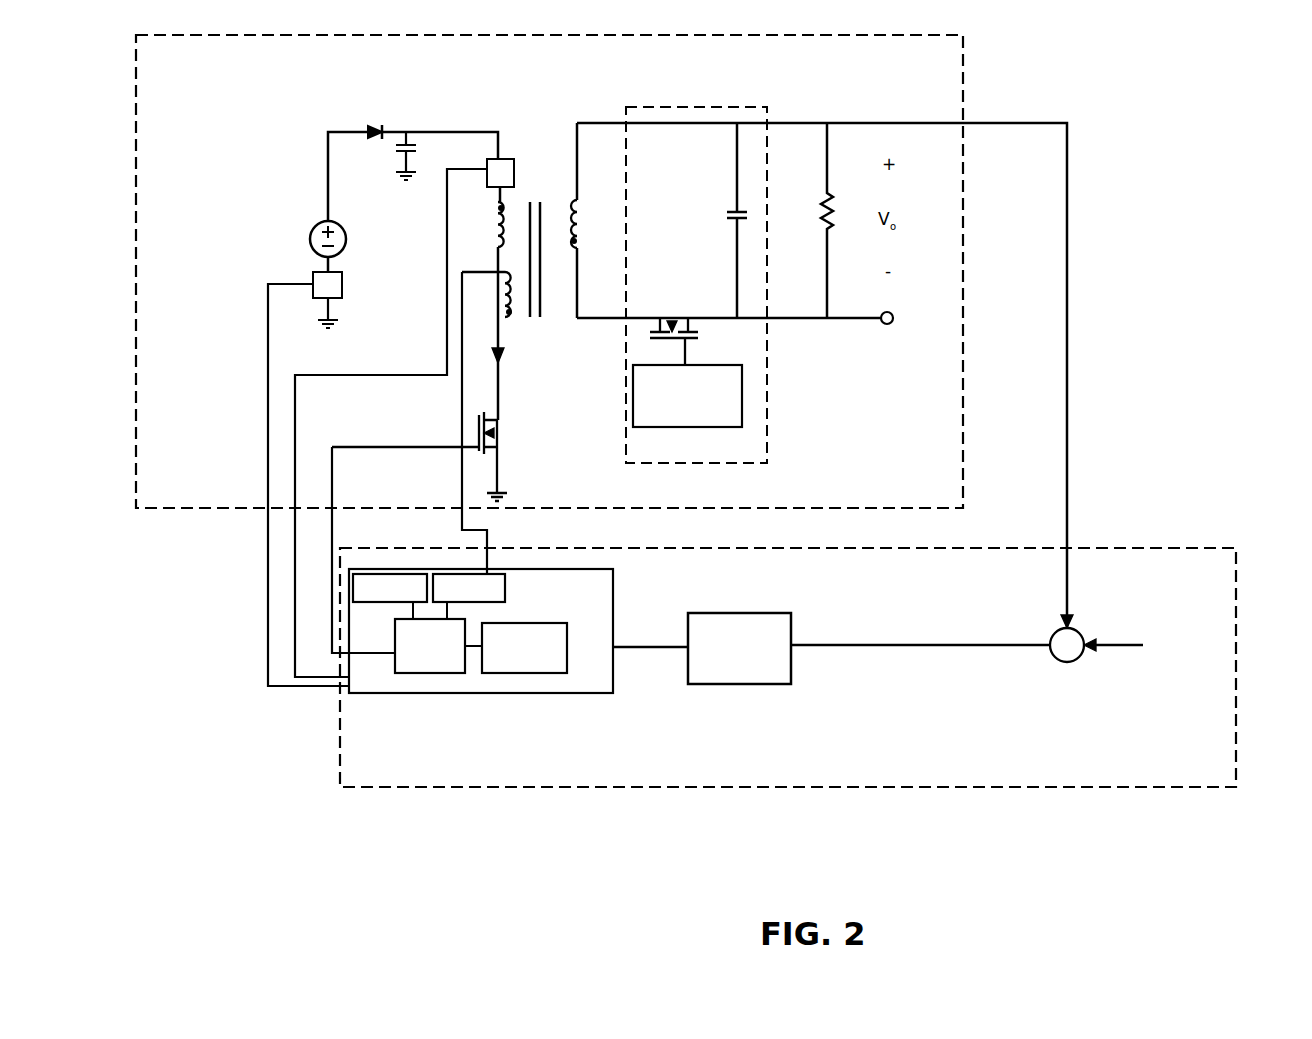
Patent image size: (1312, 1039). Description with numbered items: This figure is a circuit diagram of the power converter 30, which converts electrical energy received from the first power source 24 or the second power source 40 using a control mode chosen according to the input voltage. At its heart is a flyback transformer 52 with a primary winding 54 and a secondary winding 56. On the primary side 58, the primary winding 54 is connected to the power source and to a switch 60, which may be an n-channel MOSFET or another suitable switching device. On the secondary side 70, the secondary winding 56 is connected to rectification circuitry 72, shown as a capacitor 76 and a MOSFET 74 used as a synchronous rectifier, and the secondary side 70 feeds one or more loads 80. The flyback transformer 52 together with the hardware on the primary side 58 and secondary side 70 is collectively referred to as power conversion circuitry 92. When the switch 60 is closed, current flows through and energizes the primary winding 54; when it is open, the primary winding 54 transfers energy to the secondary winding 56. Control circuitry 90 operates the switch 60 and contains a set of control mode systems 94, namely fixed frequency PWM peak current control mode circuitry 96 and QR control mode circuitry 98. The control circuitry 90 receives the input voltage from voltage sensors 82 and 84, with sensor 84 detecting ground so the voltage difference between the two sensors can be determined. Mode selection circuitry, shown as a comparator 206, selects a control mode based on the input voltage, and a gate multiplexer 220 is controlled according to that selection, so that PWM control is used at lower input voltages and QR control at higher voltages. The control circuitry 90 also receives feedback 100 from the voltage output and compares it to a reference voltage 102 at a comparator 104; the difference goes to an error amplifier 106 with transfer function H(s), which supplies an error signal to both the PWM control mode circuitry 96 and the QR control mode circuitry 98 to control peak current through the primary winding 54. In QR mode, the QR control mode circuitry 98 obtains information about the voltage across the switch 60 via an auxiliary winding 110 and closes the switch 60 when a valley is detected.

The power converter 30 is at (1270, 58).
The primary side 58 is at (578, 271).
The power conversion circuitry 92 is at (963, 92).
The secondary side 70 is at (638, 86).
The first power source 24 is at (337, 202).
The second power source 40 is at (346, 239).
The voltage sensor 84 is at (342, 290).
The voltage sensor 82 is at (487, 167).
The flyback transformer 52 is at (540, 172).
The primary winding 54 is at (498, 236).
The secondary winding 56 is at (580, 228).
The auxiliary winding 110 is at (516, 320).
The switch 60 is at (477, 432).
The rectification circuitry 72 is at (717, 106).
The capacitor 76 is at (736, 217).
The load 80 is at (825, 212).
The MOSFET 74 is at (692, 332).
The control circuitry 90 is at (637, 788).
The set of control mode systems 94 is at (490, 694).
The fixed frequency PWM peak current control mode circuitry 96 is at (388, 573).
The QR control mode circuitry 98 is at (496, 573).
The gate multiplexer 220 is at (398, 674).
The comparator 206 is at (545, 674).
The error amplifier 106 is at (742, 685).
The comparator 104 is at (1055, 660).
The feedback 100 is at (1068, 462).
The reference voltage 102 is at (1115, 652).